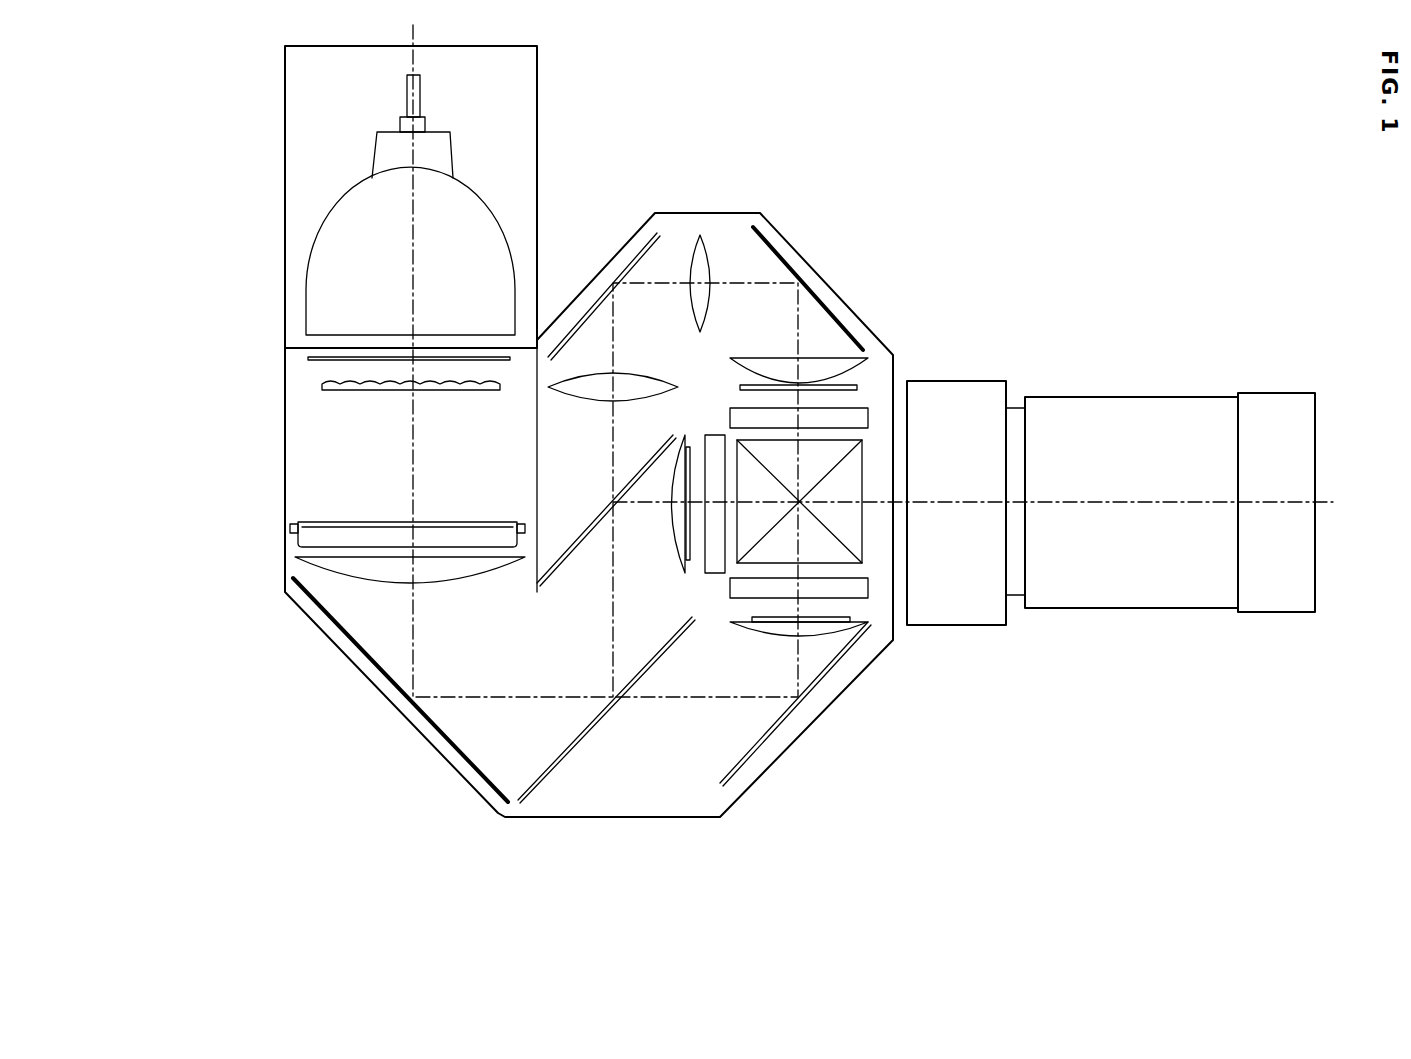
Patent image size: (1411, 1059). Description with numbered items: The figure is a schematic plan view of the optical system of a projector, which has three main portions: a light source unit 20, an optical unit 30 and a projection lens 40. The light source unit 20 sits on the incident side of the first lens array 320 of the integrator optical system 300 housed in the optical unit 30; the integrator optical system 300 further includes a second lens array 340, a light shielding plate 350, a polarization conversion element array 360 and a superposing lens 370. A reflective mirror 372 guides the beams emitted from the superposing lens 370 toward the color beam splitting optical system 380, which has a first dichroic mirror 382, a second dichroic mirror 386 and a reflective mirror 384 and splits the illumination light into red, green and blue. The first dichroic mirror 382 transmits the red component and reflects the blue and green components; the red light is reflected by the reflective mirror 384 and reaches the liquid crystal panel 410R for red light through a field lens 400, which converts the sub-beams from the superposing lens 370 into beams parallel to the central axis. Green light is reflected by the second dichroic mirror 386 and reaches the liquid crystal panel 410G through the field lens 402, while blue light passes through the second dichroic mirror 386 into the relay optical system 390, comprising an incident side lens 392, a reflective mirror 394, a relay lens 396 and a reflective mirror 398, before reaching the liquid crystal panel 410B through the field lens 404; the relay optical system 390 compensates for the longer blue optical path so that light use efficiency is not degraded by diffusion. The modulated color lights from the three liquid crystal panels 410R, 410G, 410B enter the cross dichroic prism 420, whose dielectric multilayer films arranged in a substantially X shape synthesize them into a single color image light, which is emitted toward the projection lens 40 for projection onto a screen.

The light source unit 20 is at (279, 226).
The optical unit 30 is at (620, 852).
The projection lens 40 is at (1122, 383).
The integrator optical system 300 is at (297, 473).
The first lens array 320 is at (318, 384).
The second lens array 340 is at (291, 524).
The light shielding plate 350 is at (291, 524).
The polarization conversion element array 360 is at (290, 527).
The superposing lens 370 is at (300, 562).
The reflective mirror 372 is at (328, 640).
The color beam splitting optical system 380 is at (552, 683).
The first dichroic mirror 382 is at (603, 712).
The reflective mirror 384 is at (745, 755).
The second dichroic mirror 386 is at (573, 547).
The relay optical system 390 is at (721, 255).
The incident side lens 392 is at (570, 400).
The reflective mirror 394 is at (590, 316).
The relay lens 396 is at (710, 300).
The reflective mirror 398 is at (795, 268).
The field lens 400 is at (818, 633).
The field lens 402 is at (673, 513).
The field lens 404 is at (787, 358).
The liquid crystal panel for blue light 410B is at (869, 410).
The liquid crystal panel for green light 410G is at (703, 433).
The liquid crystal panel for red light 410R is at (728, 600).
The cross dichroic prism 420 is at (867, 540).